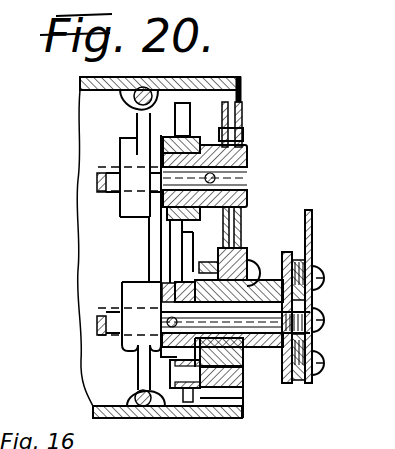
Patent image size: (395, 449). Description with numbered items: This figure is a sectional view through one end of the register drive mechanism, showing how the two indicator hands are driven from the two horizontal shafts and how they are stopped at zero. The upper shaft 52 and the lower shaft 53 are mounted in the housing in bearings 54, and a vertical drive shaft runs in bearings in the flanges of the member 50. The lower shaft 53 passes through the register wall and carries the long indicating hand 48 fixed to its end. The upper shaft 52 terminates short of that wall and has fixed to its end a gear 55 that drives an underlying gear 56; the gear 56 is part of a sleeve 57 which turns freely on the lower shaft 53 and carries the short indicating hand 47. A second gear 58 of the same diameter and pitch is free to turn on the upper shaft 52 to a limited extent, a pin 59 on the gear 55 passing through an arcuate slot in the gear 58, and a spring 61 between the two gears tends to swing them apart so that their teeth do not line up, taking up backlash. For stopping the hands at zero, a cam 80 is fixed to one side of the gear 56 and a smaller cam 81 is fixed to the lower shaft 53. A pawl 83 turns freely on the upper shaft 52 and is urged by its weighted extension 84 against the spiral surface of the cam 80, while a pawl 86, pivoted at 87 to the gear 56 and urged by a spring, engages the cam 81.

The member 50 is at (90, 80).
The weighted extension 84 is at (183, 108).
The second gear 58 is at (224, 106).
The gear 55 is at (242, 108).
The pin 59 is at (242, 131).
The spring 61 is at (244, 147).
The upper shaft 52 is at (108, 178).
The bearings 54 is at (128, 208).
The pawl 83 is at (187, 253).
The cam 80 is at (203, 254).
The sleeve 57 is at (250, 289).
The lower shaft 53 is at (108, 322).
The cam 81 is at (170, 291).
The indicating hand 47 is at (291, 252).
The indicating hand 48 is at (312, 240).
The gear 56 is at (244, 398).
The pivot 87 is at (170, 372).
The pawl 86 is at (188, 389).